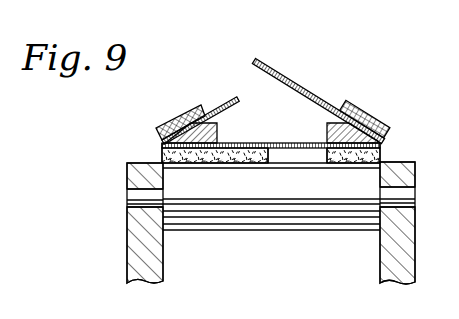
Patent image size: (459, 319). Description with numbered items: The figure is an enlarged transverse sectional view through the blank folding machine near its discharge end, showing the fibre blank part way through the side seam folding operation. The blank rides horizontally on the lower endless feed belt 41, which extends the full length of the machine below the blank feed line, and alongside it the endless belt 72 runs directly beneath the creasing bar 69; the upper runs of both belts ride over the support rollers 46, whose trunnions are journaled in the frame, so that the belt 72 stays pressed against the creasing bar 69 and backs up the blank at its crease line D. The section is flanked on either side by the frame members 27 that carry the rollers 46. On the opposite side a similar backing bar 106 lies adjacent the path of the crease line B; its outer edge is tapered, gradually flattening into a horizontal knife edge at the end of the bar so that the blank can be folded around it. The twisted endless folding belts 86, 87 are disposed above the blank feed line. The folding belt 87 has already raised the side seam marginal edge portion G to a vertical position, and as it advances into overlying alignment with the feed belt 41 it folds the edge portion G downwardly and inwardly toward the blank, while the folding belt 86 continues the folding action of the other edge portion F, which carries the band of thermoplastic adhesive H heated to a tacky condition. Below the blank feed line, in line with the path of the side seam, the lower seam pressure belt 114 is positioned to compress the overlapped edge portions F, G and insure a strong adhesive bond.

The support pillar 27 is at (140, 240).
The lower endless feed belt 41 is at (197, 157).
The support rollers 46 is at (273, 209).
The creasing bar 69 is at (327, 126).
The endless belt 72 is at (355, 150).
The twisted endless folding belt 86 is at (354, 121).
The twisted endless folding belt 87 is at (180, 128).
The backing bar 106 is at (218, 128).
The lower seam pressure belt 114 is at (227, 151).
The transverse crease line B is at (160, 145).
The transverse crease line D is at (387, 141).
The side seam marginal edge portion F is at (250, 57).
The side seam marginal edge portion G is at (243, 98).
The thermoplastic adhesive H is at (256, 74).